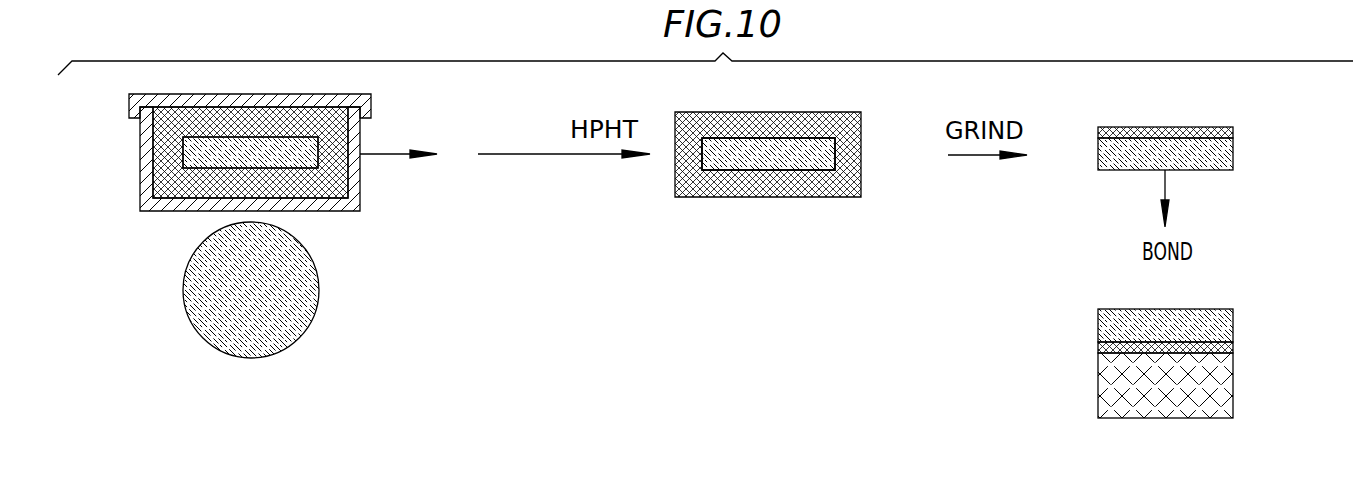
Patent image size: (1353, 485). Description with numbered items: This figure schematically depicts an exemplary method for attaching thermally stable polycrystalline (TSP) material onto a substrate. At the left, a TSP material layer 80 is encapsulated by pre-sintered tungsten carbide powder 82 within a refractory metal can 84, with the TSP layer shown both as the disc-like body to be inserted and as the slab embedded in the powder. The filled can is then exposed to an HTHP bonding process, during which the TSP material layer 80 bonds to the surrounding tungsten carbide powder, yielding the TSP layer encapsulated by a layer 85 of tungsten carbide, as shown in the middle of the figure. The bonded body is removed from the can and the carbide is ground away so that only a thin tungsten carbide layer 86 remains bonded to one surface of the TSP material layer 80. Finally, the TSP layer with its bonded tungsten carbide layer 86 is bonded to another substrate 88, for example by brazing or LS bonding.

The TSP material layer 80 is at (197, 152).
The pre-sintered tungsten carbide powder 82 is at (325, 187).
The refractory metal can 84 is at (185, 203).
The layer of tungsten carbide 85 is at (802, 185).
The tungsten carbide layer 86 is at (1232, 129).
The substrate 88 is at (1222, 390).